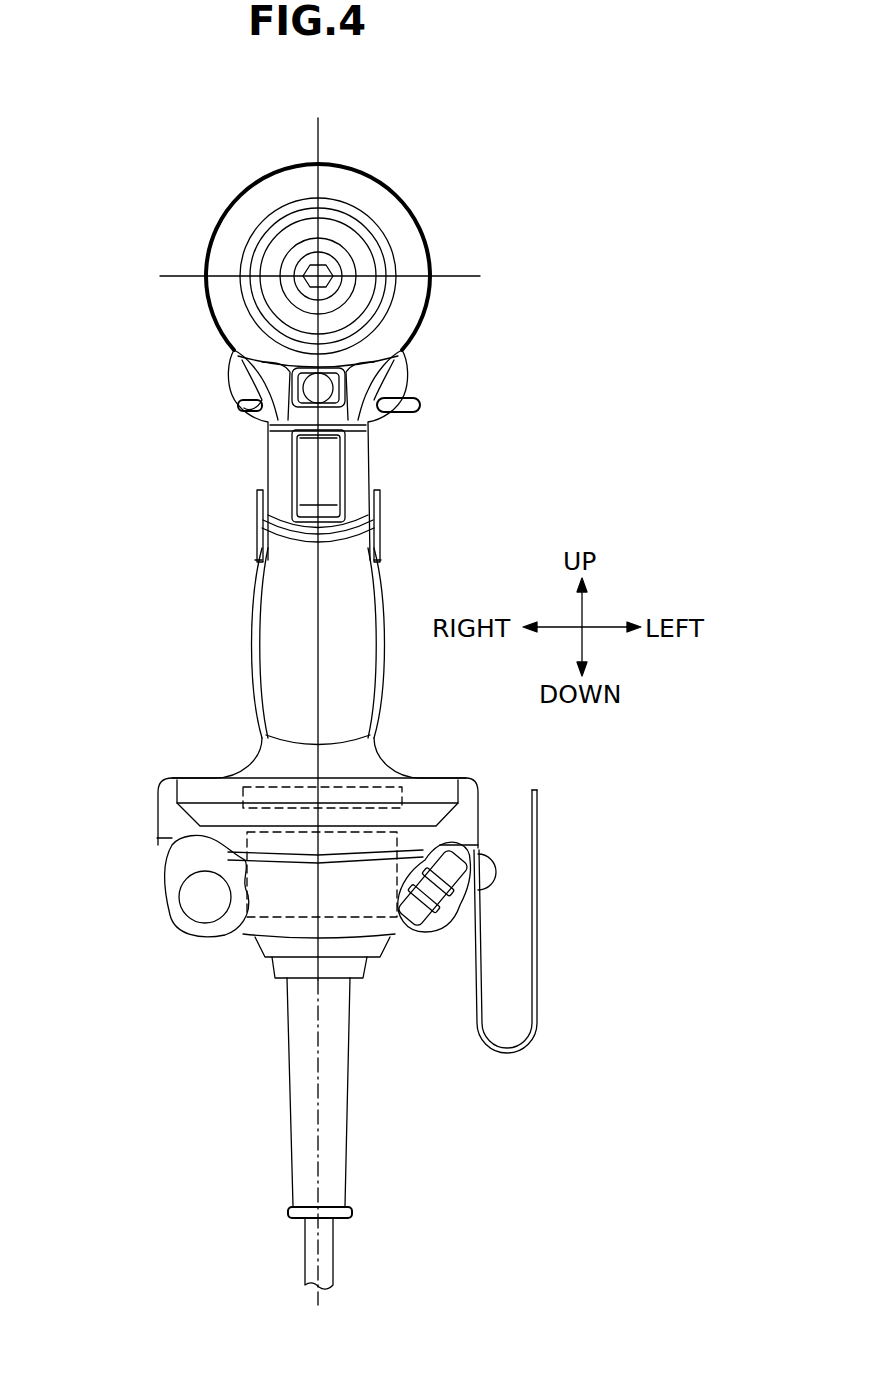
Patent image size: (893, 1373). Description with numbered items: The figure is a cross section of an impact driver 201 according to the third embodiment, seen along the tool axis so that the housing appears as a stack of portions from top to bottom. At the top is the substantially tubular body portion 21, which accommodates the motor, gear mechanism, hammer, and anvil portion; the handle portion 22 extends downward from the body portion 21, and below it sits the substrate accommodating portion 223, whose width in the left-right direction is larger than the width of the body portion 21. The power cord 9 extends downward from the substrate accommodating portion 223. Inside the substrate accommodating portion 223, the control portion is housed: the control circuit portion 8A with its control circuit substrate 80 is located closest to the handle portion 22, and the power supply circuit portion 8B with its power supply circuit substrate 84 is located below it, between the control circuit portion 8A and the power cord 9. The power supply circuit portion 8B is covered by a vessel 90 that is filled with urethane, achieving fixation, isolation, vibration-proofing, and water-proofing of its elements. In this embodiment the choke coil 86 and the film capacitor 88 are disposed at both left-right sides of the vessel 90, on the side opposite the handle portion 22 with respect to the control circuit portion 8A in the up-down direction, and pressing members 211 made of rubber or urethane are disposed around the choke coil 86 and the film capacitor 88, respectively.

The impact driver 201 is at (465, 209).
The body portion 21 is at (210, 232).
The handle portion 22 is at (272, 640).
The substrate accommodating portion 223 is at (204, 782).
The control circuit portion 8A is at (398, 774).
The control circuit substrate 80 is at (353, 763).
The power supply circuit portion 8B is at (260, 923).
The power supply circuit substrate 84 is at (292, 916).
The pressing member 211 is at (187, 863).
The film capacitor 88 is at (197, 900).
The choke coil 86 is at (427, 915).
The vessel 90 is at (345, 915).
The power cord 9 is at (307, 1047).